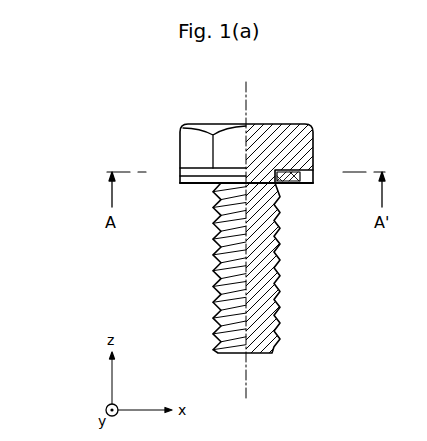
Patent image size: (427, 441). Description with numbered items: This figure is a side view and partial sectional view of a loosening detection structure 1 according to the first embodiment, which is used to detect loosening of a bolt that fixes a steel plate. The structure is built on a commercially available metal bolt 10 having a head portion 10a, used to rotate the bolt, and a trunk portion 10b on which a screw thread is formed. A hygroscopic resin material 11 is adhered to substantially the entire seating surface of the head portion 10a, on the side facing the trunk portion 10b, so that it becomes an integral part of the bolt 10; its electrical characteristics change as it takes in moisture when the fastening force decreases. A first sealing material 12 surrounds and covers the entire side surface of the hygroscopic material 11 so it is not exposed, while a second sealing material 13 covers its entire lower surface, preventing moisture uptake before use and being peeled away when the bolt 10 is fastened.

The loosening detection structure 1 is at (252, 78).
The metal bolt 10 is at (207, 122).
The head portion 10a is at (294, 123).
The trunk portion 10b is at (280, 325).
The hygroscopic resin material 11 is at (300, 173).
The first sealing material 12 is at (180, 169).
The second sealing material 13 is at (180, 184).